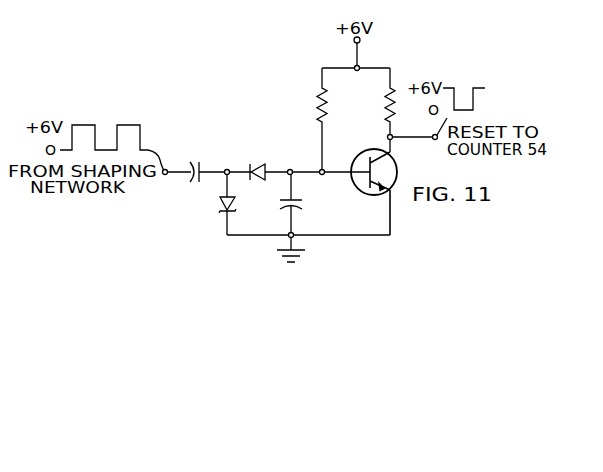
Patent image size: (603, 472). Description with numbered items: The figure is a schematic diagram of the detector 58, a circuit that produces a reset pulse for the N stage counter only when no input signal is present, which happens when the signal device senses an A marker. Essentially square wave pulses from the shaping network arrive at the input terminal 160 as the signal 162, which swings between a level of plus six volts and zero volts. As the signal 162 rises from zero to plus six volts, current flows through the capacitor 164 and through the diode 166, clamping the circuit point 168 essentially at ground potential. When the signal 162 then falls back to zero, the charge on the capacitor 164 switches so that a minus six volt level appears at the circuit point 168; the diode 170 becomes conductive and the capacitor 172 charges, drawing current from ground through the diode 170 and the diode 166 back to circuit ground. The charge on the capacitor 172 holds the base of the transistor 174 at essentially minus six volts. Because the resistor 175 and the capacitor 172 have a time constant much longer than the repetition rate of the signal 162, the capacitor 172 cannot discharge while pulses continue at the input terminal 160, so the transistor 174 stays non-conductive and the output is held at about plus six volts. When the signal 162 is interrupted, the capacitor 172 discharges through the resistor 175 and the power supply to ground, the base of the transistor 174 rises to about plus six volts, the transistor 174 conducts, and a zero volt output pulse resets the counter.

The detector 58 is at (271, 119).
The input terminal 160 is at (163, 176).
The signal 162 is at (128, 125).
The capacitor 164 is at (191, 161).
The diode 166 is at (218, 205).
The circuit point 168 is at (226, 169).
The diode 170 is at (253, 162).
The capacitor 172 is at (304, 203).
The transistor 174 is at (355, 160).
The resistor 175 is at (330, 103).